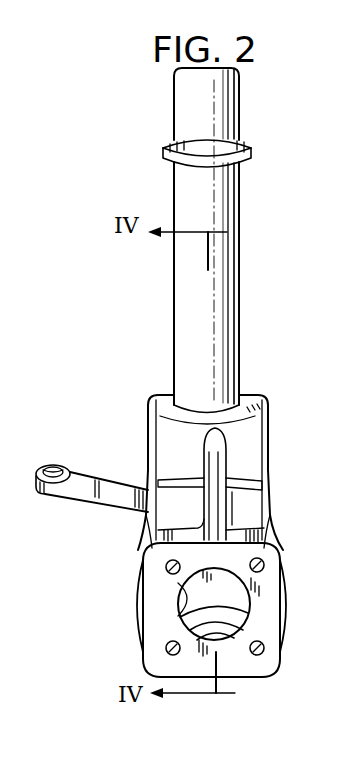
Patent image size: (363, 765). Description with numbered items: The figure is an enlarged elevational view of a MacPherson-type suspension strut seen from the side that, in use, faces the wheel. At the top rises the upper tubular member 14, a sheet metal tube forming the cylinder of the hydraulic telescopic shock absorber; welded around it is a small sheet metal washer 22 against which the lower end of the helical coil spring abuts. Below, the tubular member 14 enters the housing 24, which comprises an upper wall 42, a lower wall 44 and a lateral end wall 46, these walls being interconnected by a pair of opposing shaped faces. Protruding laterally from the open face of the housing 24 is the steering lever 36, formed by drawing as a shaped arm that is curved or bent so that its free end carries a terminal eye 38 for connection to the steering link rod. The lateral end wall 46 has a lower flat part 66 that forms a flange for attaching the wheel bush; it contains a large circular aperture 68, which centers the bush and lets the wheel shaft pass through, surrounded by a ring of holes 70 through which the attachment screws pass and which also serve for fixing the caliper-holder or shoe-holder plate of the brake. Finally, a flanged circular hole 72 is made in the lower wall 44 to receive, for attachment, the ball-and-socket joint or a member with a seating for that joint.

The upper tubular member 14 is at (238, 265).
The sheet metal washer 22 is at (243, 160).
The housing 24 is at (275, 436).
The steering lever 36 is at (108, 500).
The terminal eye 38 is at (70, 469).
The upper wall 42 is at (258, 403).
The lower wall 44 is at (236, 606).
The lateral end wall 46 is at (247, 505).
The lower flat part 66 is at (287, 620).
The circular aperture 68 is at (178, 603).
The holes 70 is at (166, 567).
The flanged circular hole 72 is at (224, 632).